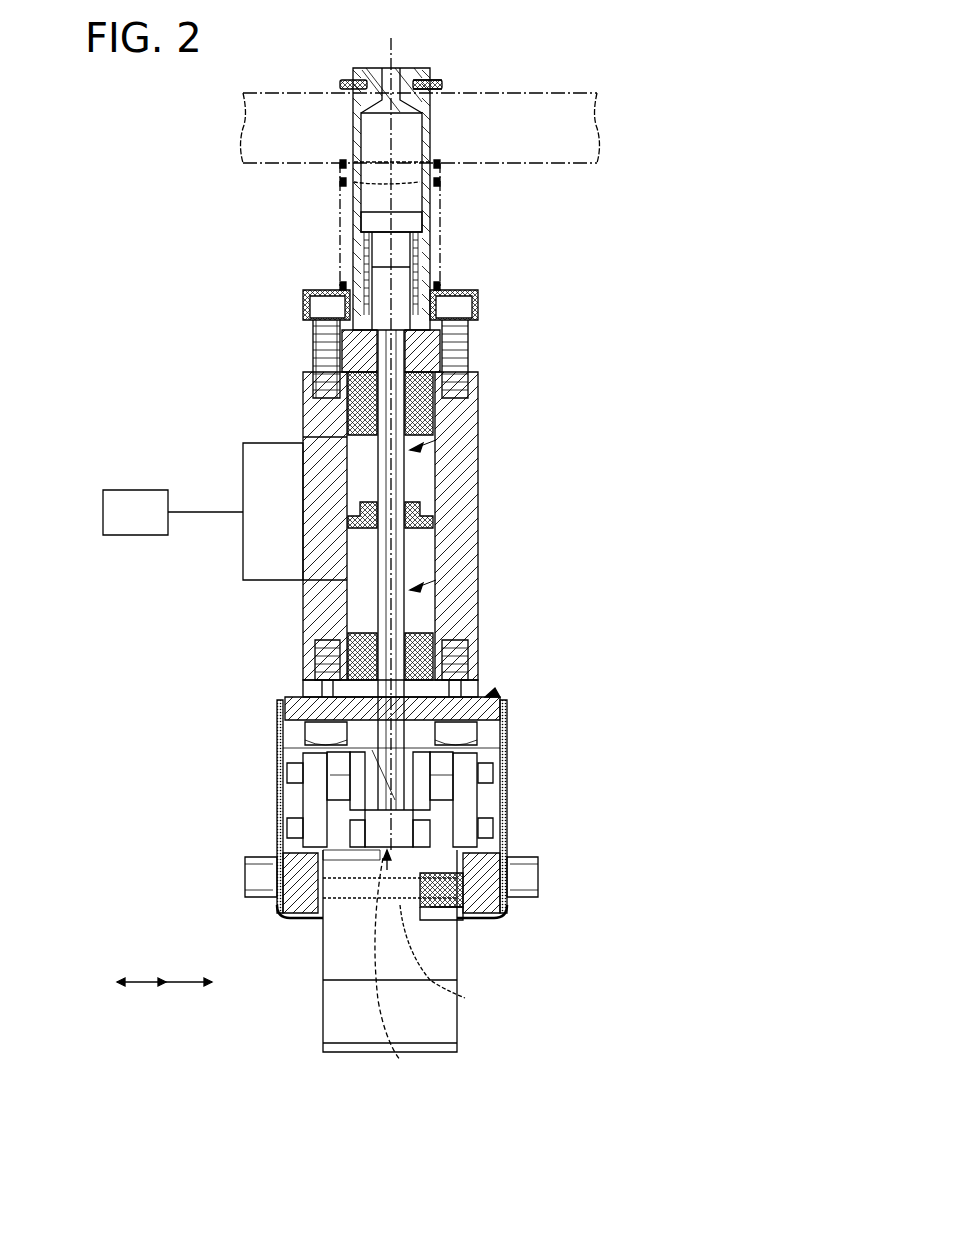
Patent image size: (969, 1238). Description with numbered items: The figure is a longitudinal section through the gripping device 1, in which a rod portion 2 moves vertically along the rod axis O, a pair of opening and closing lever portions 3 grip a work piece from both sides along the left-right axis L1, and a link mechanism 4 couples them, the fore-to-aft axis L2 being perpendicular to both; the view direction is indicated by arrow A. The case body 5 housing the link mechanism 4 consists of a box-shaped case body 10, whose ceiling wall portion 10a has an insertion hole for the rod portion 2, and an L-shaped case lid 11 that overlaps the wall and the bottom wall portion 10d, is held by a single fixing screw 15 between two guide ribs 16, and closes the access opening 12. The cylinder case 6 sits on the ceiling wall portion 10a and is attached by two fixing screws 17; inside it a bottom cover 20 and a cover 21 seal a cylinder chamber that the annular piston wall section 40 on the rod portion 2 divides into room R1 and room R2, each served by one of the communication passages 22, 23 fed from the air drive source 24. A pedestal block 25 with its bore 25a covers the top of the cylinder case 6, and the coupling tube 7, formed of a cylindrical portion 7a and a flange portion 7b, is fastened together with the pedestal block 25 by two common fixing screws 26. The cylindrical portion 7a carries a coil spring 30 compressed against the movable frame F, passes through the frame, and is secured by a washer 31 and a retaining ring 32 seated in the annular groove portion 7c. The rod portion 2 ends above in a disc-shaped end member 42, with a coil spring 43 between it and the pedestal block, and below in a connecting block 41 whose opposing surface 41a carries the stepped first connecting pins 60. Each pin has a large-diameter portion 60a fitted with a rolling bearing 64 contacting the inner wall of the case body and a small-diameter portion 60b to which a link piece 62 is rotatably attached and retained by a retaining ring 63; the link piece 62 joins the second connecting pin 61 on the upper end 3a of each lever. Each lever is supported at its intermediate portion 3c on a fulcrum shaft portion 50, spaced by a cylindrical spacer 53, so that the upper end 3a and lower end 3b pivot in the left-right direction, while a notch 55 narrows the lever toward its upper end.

The actuator 1 is at (603, 213).
The rod portion 2 is at (398, 462).
The opening and closing lever portion 3 is at (318, 967).
The upper end 3a is at (283, 760).
The lower end 3b is at (340, 1018).
The intermediate portion 3c is at (350, 876).
The link mechanism 4 is at (203, 765).
The case body 5 is at (593, 684).
The cylinder case 6 is at (470, 541).
The coupling tube 7 is at (440, 208).
The cylindrical portion 7a is at (430, 243).
The flange portion 7b is at (468, 325).
The annular groove portion 7c is at (348, 86).
The case body 10 is at (500, 698).
The ceiling wall portion 10a is at (318, 678).
The bottom wall portion 10d is at (285, 926).
The case lid 11 is at (280, 700).
The access opening 12 is at (507, 746).
The fixing screw 15 is at (255, 880).
The guide rib 16 is at (500, 692).
The fixing screw 17 is at (310, 735).
The bottom cover 20 is at (350, 640).
The cover 21 is at (360, 408).
The communication passage 22 is at (303, 437).
The communication passage 23 is at (305, 600).
The air drive source 24 is at (138, 490).
The pedestal block 25 is at (314, 362).
The bolt shank 25a is at (326, 344).
The fixing screw 26 is at (312, 310).
The coil spring 30 is at (355, 190).
The washer 31 is at (436, 88).
The retaining ring 32 is at (420, 82).
The piston wall section 40 is at (420, 507).
The connecting block 41 is at (402, 968).
The opposing surface 41a is at (248, 866).
The end member 42 is at (362, 222).
The coil spring 43 is at (411, 267).
The fulcrum shaft portion 50 is at (465, 1006).
The cylindrical spacer 53 is at (315, 912).
The notch 55 is at (385, 870).
The first connecting pin 60 is at (290, 830).
The large-diameter portion 60a is at (405, 800).
The small-diameter portion 60b is at (300, 850).
The second connecting pin 61 is at (305, 774).
The link piece 62 is at (330, 802).
The retaining ring 63 is at (296, 828).
The rolling bearing 64 is at (495, 910).
The direction A is at (112, 388).
The movable frame F is at (546, 102).
The rod axis O is at (396, 60).
The room R1 is at (436, 440).
The room R2 is at (436, 580).
The left-right axis L1 is at (166, 984).
The fore-to-aft axis L2 is at (140, 982).